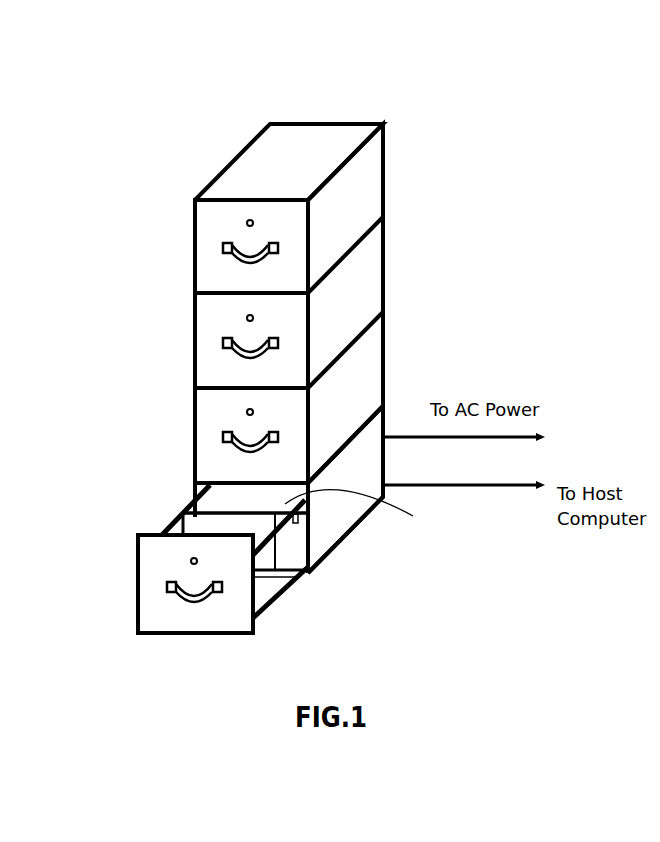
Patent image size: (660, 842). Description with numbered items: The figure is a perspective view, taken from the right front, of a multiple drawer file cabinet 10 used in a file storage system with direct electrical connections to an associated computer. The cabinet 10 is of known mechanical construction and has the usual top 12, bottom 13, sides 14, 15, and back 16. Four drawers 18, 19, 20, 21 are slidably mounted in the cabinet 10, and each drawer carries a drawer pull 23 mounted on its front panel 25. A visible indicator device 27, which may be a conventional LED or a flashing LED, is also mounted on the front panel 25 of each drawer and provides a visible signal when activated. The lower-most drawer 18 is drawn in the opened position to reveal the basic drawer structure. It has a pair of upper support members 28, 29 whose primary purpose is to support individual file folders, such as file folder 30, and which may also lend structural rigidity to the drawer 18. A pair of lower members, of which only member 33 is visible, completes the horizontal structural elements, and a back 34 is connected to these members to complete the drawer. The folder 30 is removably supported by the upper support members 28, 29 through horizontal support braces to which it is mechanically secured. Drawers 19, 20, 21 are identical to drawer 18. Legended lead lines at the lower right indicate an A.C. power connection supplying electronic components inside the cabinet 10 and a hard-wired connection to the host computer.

The multiple drawer file cabinet 10 is at (190, 236).
The top 12 is at (270, 180).
The bottom 13 is at (348, 537).
The side 14 is at (195, 280).
The side 15 is at (362, 188).
The back 16 is at (343, 122).
The lower-most drawer 18 is at (148, 544).
The drawer 19 is at (227, 460).
The drawer 20 is at (195, 326).
The drawer 21 is at (200, 228).
The drawer pull 23 is at (232, 258).
The front panel 25 is at (218, 217).
The visible indicator device 27 is at (247, 220).
The upper support member 28 is at (180, 511).
The upper support member 29 is at (262, 553).
The file folder 30 is at (247, 528).
The lower member 33 is at (293, 583).
The back 34 is at (413, 516).